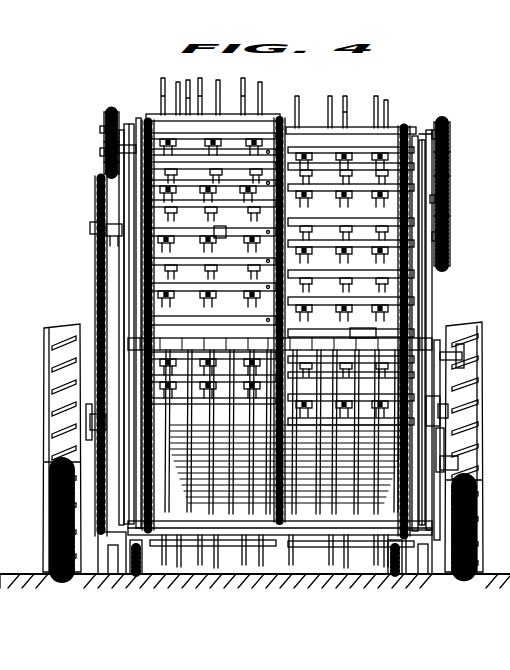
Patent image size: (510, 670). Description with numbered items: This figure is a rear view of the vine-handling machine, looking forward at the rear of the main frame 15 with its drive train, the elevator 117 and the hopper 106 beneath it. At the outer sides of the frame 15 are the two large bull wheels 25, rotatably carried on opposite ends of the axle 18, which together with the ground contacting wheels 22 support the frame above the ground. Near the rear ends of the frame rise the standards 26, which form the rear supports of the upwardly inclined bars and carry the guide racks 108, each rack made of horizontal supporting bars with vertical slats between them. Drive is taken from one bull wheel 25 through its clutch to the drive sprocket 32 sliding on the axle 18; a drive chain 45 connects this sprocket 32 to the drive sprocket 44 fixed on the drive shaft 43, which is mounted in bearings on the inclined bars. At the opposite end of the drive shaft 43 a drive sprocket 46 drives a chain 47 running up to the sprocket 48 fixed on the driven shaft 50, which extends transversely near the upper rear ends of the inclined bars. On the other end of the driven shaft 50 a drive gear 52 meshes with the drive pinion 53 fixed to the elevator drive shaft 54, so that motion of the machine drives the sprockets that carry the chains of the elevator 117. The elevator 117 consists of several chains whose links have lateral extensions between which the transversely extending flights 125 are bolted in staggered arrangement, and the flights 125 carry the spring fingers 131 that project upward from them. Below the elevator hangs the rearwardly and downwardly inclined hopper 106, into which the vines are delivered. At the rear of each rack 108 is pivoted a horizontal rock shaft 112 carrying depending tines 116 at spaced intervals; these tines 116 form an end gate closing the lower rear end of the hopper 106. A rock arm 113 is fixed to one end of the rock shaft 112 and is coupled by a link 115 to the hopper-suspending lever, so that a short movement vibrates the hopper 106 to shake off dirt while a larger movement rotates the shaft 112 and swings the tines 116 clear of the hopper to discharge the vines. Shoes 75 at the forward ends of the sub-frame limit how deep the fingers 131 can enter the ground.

The main frame 15 is at (6, 374).
The axle 18 is at (458, 466).
The ground contacting wheels 22 is at (136, 566).
The bull wheels 25 is at (62, 357).
The standards 26 is at (119, 178).
The drive sprocket 32 is at (92, 424).
The drive shaft 43 is at (112, 236).
The drive sprocket 44 is at (95, 208).
The drive chain 45 is at (95, 290).
The drive sprocket 46 is at (450, 250).
The chain 47 is at (450, 212).
The sprocket 48 is at (450, 138).
The driven shaft 50 is at (112, 145).
The drive gear 52 is at (104, 162).
The drive pinion 53 is at (109, 113).
The elevator drive shaft 54 is at (128, 124).
The shoe 75 is at (113, 542).
The hopper 106 is at (280, 506).
The guide rack 108 is at (124, 317).
The rock shaft 112 is at (374, 334).
The rock arm 113 is at (452, 356).
The link 115 is at (440, 419).
The tines 116 is at (238, 502).
The elevator 117 is at (354, 157).
The flights 125 is at (189, 114).
The post 131 is at (260, 100).